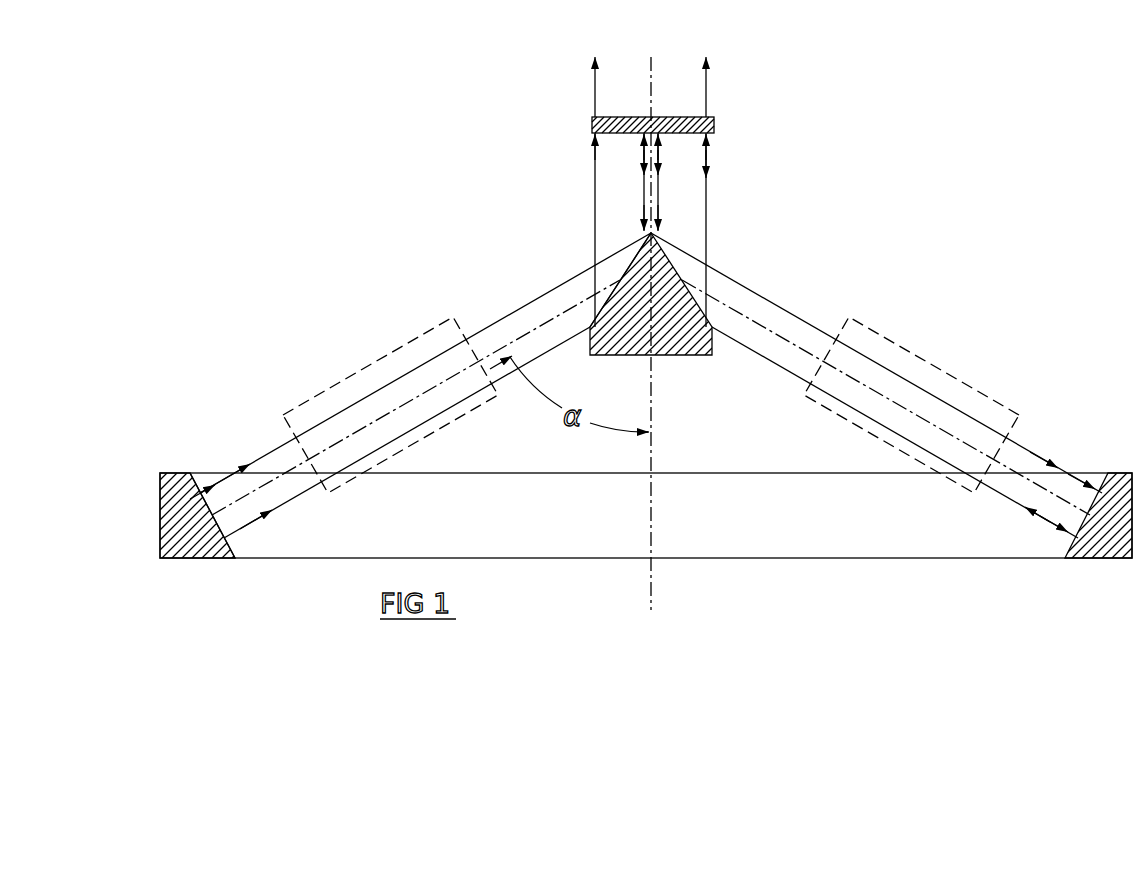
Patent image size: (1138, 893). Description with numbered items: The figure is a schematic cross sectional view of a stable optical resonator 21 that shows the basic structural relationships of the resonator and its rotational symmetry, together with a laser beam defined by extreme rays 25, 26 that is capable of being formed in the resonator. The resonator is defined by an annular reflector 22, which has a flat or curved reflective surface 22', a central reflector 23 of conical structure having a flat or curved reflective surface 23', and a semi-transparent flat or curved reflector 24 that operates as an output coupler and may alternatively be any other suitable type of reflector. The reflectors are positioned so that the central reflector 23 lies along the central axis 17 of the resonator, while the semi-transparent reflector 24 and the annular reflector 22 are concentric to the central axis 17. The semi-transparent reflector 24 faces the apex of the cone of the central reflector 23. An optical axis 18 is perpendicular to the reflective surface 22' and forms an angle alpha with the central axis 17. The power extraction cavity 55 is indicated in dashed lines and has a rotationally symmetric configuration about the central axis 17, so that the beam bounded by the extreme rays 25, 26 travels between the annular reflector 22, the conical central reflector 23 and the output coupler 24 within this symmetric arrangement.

The central axis 17 is at (657, 597).
The optical axis 18 is at (404, 402).
The stable optical resonator 21 is at (920, 302).
The annular reflector 22 is at (646, 476).
The reflective surface 22' is at (274, 515).
The central reflector 23 is at (651, 319).
The reflective surface 23' is at (594, 255).
The semi-transparent reflector 24 is at (677, 115).
The extreme ray 25 is at (513, 312).
The extreme ray 26 is at (464, 403).
The power extraction cavity 55 is at (950, 388).